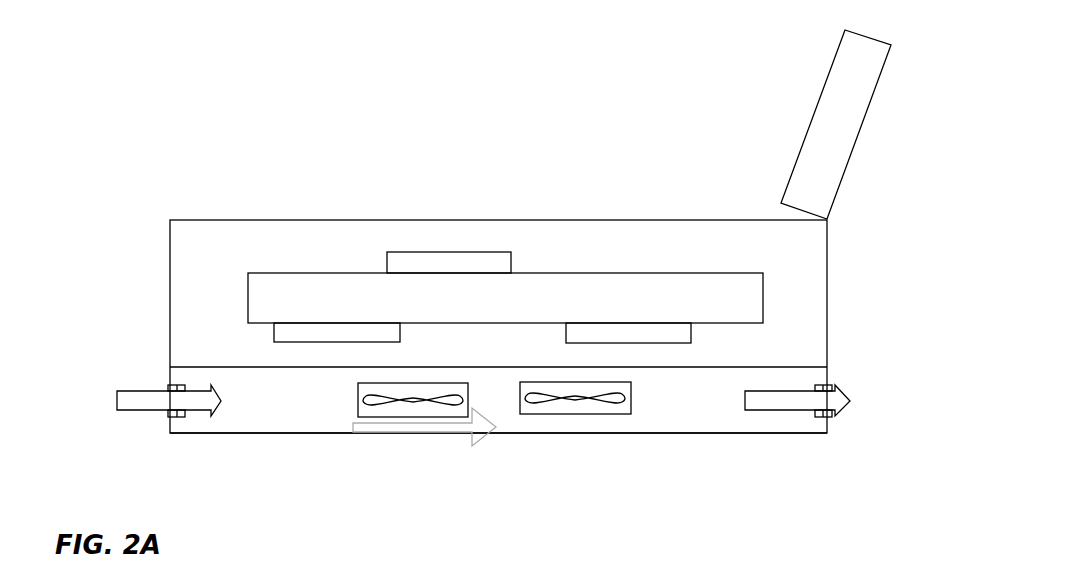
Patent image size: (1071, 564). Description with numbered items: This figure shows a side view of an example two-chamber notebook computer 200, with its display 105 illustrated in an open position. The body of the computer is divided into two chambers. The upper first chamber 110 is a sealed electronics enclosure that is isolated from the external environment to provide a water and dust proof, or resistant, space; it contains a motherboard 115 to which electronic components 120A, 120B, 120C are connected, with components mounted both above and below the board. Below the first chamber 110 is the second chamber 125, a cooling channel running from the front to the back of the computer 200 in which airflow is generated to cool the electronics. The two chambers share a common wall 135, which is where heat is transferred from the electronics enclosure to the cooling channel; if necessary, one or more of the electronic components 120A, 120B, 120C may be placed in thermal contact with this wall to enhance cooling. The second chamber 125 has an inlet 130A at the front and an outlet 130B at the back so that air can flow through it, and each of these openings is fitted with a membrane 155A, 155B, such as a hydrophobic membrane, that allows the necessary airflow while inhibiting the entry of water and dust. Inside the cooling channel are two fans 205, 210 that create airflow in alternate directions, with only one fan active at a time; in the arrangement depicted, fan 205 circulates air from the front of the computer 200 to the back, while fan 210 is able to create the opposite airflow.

The two-chamber notebook computer 200 is at (128, 149).
The display 105 is at (811, 117).
The first chamber 110 is at (170, 297).
The motherboard 115 is at (248, 300).
The electronic component 120A is at (387, 268).
The electronic component 120B is at (400, 328).
The electronic component 120C is at (691, 326).
The second chamber 125 is at (512, 434).
The common wall 135 is at (494, 367).
The inlet 130A is at (158, 418).
The outlet 130B is at (833, 418).
The membrane 155A is at (185, 416).
The membrane 155B is at (814, 418).
The fan 205 is at (358, 404).
The fan 210 is at (632, 386).